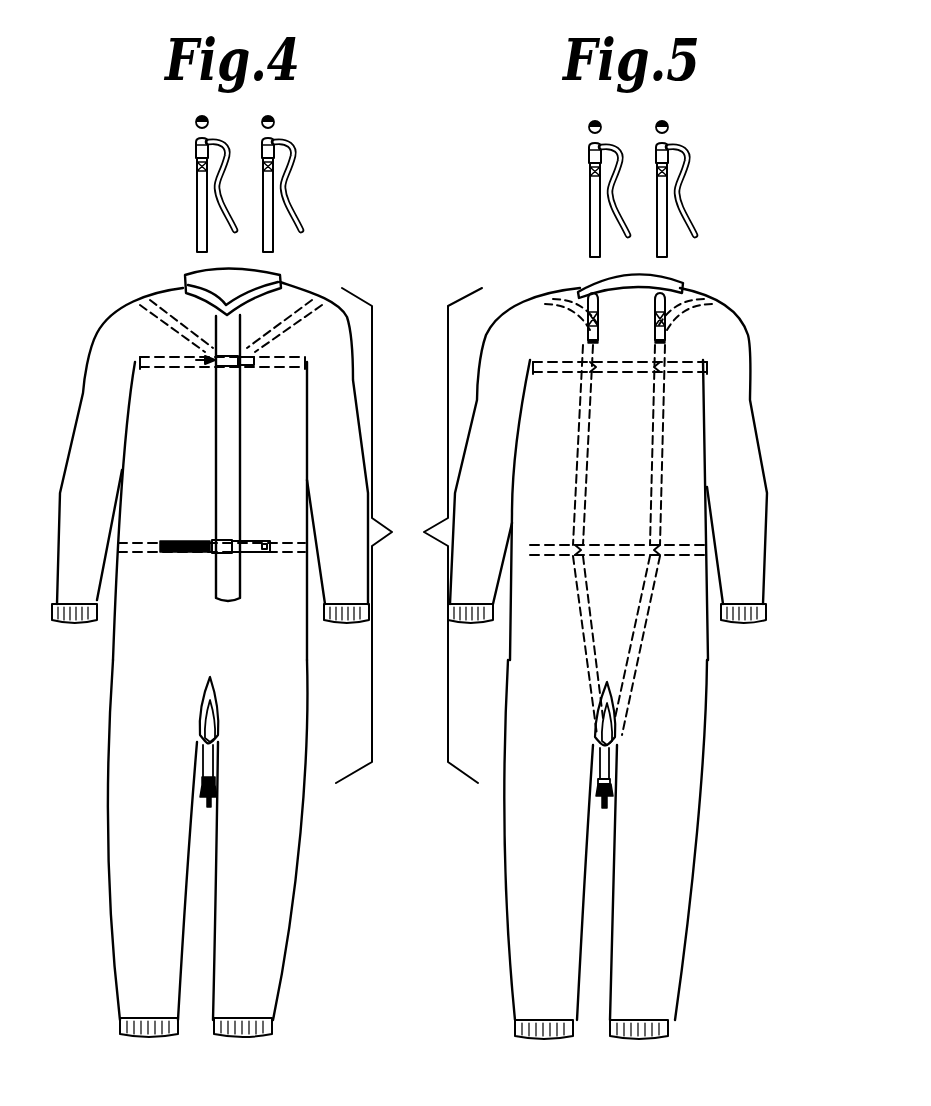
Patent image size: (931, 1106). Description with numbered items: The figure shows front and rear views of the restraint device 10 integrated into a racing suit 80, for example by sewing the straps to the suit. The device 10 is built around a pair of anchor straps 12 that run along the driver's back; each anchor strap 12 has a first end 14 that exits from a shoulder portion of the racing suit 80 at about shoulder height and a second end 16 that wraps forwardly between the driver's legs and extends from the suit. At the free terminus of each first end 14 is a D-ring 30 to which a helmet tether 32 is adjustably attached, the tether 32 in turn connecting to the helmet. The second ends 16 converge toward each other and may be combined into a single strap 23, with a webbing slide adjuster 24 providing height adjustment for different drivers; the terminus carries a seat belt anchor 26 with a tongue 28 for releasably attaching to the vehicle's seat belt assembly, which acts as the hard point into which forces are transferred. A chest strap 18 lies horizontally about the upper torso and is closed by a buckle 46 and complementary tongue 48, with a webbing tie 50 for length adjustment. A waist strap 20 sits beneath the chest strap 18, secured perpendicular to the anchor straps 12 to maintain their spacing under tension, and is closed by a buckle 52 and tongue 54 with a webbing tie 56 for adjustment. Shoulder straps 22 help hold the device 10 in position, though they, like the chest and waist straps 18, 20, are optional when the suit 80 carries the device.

In FIG. 4, the restraint device 10 is at (380, 535).
In FIG. 5, the anchor straps 12 is at (660, 458).
In FIG. 5, the first end 14 is at (588, 330).
In FIG. 4, the second end 16 is at (198, 740).
In FIG. 5, the second end 16 is at (632, 657).
In FIG. 4, the chest strap 18 is at (172, 358).
In FIG. 5, the chest strap 18 is at (688, 366).
In FIG. 4, the waist strap 20 is at (140, 543).
In FIG. 5, the waist strap 20 is at (680, 554).
In FIG. 4, the shoulder straps 22 is at (160, 310).
In FIG. 5, the shoulder straps 22 is at (553, 305).
In FIG. 5, the single strap 23 is at (603, 770).
In FIG. 5, the webbing slide adjuster 24 is at (608, 780).
In FIG. 4, the seat belt anchor 26 is at (209, 800).
In FIG. 5, the seat belt anchor 26 is at (609, 792).
In FIG. 5, the tongue 28 is at (606, 806).
In FIG. 5, the D-ring 30 is at (668, 306).
In FIG. 4, the helmet tether 32 is at (200, 208).
In FIG. 5, the helmet tether 32 is at (592, 214).
In FIG. 4, the buckle 46 is at (238, 372).
In FIG. 4, the tongue 48 is at (242, 364).
In FIG. 4, the webbing tie 50 is at (212, 366).
In FIG. 4, the buckle 52 is at (235, 554).
In FIG. 4, the tongue 54 is at (235, 545).
In FIG. 4, the webbing tie 56 is at (212, 543).
In FIG. 4, the racing suit 80 is at (350, 346).
In FIG. 5, the racing suit 80 is at (722, 334).